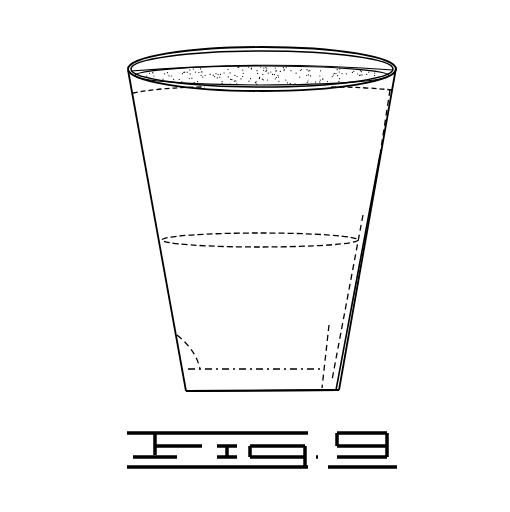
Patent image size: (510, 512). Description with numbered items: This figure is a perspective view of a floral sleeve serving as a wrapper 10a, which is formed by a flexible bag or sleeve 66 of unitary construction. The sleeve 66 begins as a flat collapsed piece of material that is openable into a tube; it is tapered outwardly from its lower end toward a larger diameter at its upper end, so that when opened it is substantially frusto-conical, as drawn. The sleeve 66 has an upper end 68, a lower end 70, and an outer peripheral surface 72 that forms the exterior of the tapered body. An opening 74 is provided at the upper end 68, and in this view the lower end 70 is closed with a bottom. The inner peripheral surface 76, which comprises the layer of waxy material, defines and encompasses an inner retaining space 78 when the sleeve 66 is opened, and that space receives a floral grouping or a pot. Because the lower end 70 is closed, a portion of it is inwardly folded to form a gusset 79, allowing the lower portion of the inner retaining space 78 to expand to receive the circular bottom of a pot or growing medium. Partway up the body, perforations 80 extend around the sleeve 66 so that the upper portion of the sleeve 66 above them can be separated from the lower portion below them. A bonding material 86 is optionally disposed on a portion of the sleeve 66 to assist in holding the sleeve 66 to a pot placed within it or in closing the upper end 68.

The wrapper 10a is at (97, 78).
The sleeve 66 is at (147, 177).
The upper end 68 is at (393, 68).
The lower end 70 is at (322, 391).
The outer peripheral surface 72 is at (352, 175).
The opening 74 is at (352, 58).
The inner peripheral surface 76 is at (212, 60).
The inner retaining space 78 is at (280, 58).
The gusset 79 is at (178, 336).
The perforations 80 is at (195, 246).
The bonding material 86 is at (261, 79).